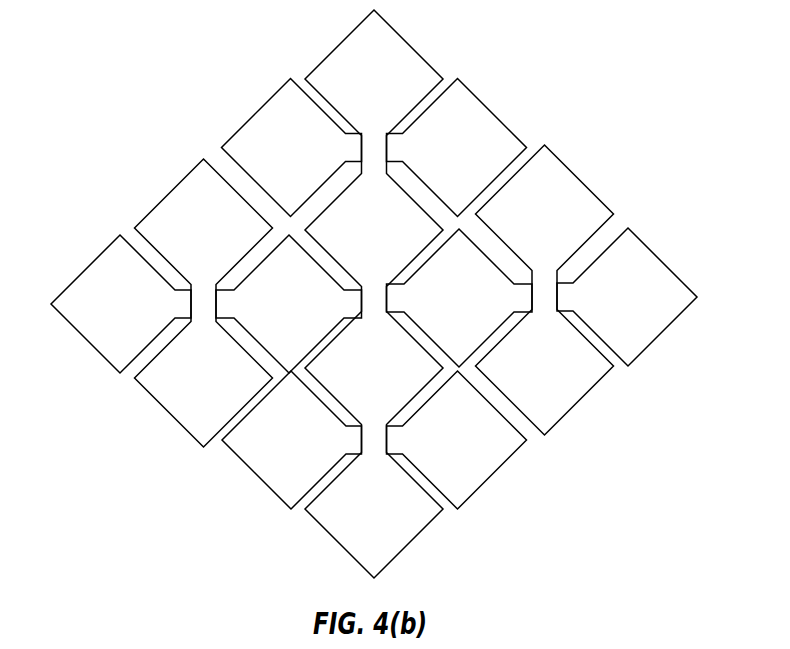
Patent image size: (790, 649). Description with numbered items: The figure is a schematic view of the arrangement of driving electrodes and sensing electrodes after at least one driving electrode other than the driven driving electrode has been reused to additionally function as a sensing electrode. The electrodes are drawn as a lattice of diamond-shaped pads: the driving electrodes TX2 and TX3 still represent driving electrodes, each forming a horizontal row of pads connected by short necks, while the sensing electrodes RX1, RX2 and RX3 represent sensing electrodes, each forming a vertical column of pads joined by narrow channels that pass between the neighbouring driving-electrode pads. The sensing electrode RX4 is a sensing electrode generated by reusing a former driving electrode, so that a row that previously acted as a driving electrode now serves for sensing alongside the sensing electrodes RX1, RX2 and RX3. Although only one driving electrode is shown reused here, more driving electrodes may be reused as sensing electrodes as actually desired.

The sensing electrode RX1 is at (204, 303).
The sensing electrode RX2 is at (374, 294).
The sensing electrode RX3 is at (545, 290).
The sensing electrode generated by reusing a driving electrode RX4 is at (374, 148).
The driving electrode TX2 is at (374, 300).
The driving electrode TX3 is at (374, 440).